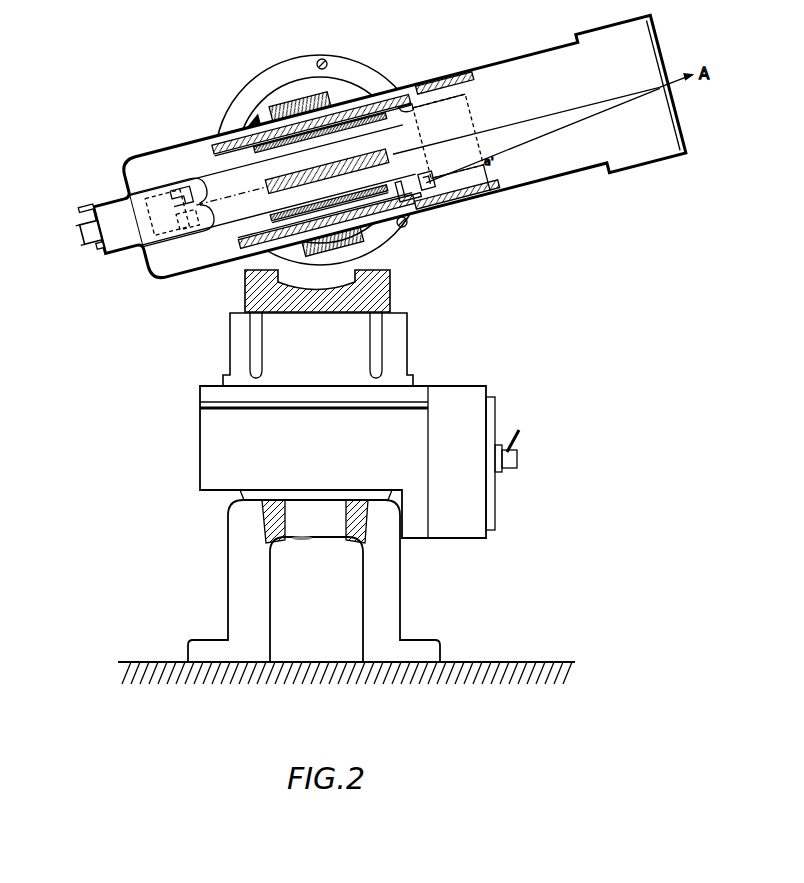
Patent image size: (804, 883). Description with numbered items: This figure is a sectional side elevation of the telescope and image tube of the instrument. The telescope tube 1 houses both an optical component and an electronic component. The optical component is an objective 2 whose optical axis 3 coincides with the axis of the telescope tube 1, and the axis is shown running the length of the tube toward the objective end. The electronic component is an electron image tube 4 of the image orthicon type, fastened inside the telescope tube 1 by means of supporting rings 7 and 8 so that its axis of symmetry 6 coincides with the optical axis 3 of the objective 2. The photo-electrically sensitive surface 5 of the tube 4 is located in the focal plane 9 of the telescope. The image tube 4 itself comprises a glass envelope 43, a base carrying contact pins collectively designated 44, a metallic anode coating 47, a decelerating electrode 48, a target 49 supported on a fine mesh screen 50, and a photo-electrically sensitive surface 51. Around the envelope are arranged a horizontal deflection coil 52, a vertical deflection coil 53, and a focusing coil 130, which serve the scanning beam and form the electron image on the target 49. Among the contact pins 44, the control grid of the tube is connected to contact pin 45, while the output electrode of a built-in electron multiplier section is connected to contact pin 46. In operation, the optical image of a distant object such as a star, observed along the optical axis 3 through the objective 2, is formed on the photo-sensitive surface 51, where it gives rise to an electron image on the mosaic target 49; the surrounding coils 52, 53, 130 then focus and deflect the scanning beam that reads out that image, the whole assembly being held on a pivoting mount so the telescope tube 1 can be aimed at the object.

The telescope tube 1 is at (165, 150).
The objective 2 is at (666, 54).
The optical axis 3 is at (612, 99).
The electron image tube 4 is at (206, 222).
The photo-electrically sensitive surface 5 is at (474, 113).
The axis of symmetry 6 is at (349, 162).
The supporting ring 7 is at (130, 260).
The supporting ring 8 is at (454, 208).
The focal plane 9 is at (491, 194).
The glass envelope 43 is at (418, 218).
The contact pins 44 is at (108, 258).
The contact pin 45 is at (89, 210).
The contact pin 46 is at (98, 250).
The metallic anode coating 47 is at (258, 170).
The decelerating electrode 48 is at (420, 88).
The target 49 is at (427, 150).
The fine mesh screen 50 is at (423, 121).
The photo-electrically sensitive surface 51 is at (489, 149).
The horizontal deflection coil 52 is at (372, 86).
The vertical deflection coil 53 is at (268, 192).
The focusing coil 130 is at (240, 244).